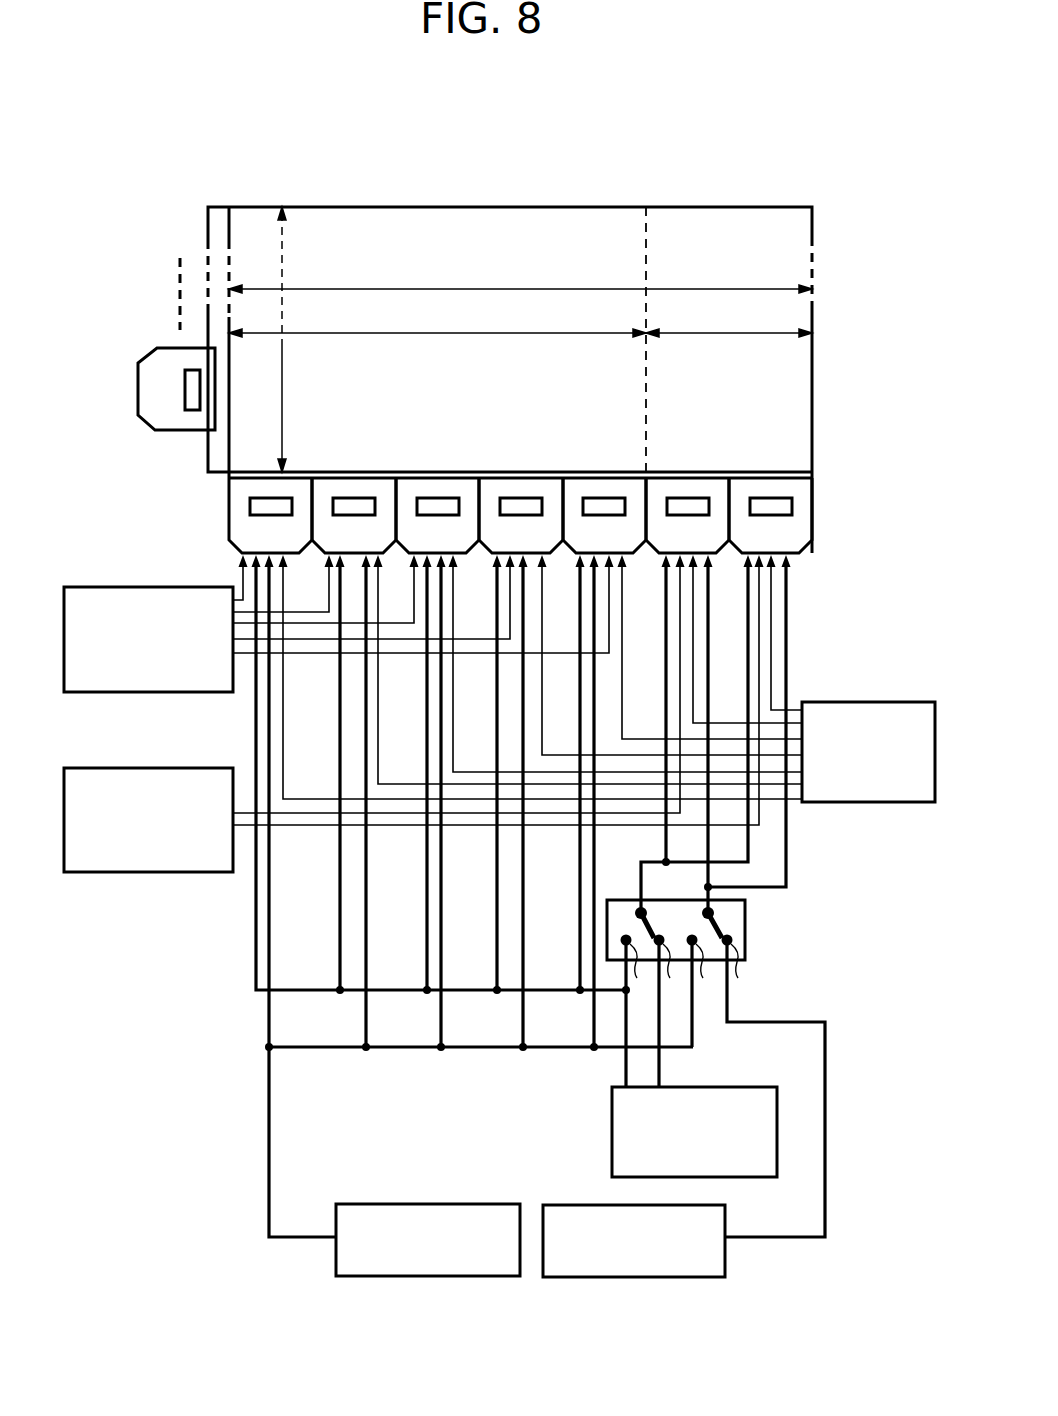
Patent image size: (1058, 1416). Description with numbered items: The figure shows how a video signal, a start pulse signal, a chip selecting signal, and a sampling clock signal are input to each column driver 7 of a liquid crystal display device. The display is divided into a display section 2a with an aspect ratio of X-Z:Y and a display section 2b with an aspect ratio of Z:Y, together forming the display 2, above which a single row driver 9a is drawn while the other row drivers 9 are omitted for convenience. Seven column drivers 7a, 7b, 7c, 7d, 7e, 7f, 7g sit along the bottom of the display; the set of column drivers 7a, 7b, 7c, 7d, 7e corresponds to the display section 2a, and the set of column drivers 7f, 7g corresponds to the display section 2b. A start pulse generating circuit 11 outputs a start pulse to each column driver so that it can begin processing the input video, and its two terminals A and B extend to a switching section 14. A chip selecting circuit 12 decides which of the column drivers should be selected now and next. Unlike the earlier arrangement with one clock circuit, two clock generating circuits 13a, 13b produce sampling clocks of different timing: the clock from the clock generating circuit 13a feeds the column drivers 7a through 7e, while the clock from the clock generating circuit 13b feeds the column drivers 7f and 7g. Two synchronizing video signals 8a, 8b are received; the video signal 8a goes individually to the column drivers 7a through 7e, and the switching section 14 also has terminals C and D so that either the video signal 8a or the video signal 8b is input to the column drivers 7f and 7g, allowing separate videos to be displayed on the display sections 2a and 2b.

The display section 2 is at (712, 170).
The display section 2a is at (588, 228).
The display section 2b is at (692, 232).
The column driver 7 is at (814, 498).
The column driver 7a is at (280, 494).
The column driver 7b is at (357, 494).
The column driver 7c is at (440, 494).
The column driver 7d is at (527, 494).
The column driver 7e is at (603, 494).
The column driver 7f is at (688, 494).
The column driver 7g is at (768, 494).
The video signal 8a is at (443, 1204).
The video signal 8b is at (575, 1205).
The row driver 9 is at (187, 441).
The row driver 9a is at (177, 404).
The start pulse generating circuit 11 is at (732, 1087).
The chip selecting circuit 12 is at (873, 802).
The clock generating circuit 13a is at (203, 692).
The clock generating circuit 13b is at (203, 872).
The switching section 14 is at (747, 932).